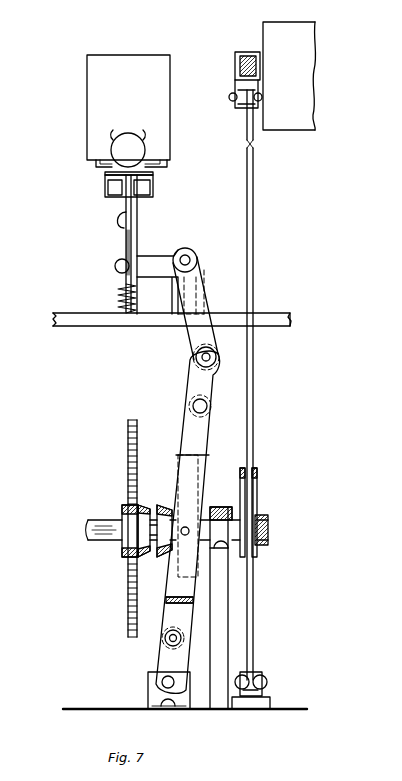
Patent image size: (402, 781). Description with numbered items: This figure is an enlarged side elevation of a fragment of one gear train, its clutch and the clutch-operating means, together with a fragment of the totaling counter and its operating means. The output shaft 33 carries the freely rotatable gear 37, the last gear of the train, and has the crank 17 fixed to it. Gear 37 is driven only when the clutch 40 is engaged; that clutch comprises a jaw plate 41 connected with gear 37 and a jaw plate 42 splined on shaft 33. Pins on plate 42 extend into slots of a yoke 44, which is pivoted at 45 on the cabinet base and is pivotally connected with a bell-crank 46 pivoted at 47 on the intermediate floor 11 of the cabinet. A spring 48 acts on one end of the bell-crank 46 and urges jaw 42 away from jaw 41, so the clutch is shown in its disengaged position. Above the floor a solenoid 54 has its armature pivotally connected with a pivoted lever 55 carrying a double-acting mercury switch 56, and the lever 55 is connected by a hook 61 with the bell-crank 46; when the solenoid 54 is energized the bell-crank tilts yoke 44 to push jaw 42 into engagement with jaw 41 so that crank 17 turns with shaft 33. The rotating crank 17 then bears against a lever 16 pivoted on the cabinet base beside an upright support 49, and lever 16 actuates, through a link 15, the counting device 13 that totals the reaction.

The intermediate floor 11 is at (80, 320).
The counting device 13 is at (287, 37).
The link 15 is at (238, 70).
The lever 16 is at (254, 395).
The crank 17 is at (257, 485).
The shaft 33 is at (98, 530).
The gear 37 is at (127, 456).
The clutch 40 is at (163, 493).
The jaw plate 41 is at (139, 505).
The jaw plate 42 is at (168, 556).
The yoke 44 is at (198, 477).
The pivot 45 is at (162, 683).
The bell-crank 46 is at (192, 332).
The pivot 47 is at (187, 256).
The spring 48 is at (122, 300).
The post 49 is at (222, 629).
The solenoid 54 is at (97, 118).
The pivoted lever 55 is at (128, 202).
The double-acting mercury switch 56 is at (122, 149).
The hook 61 is at (125, 243).